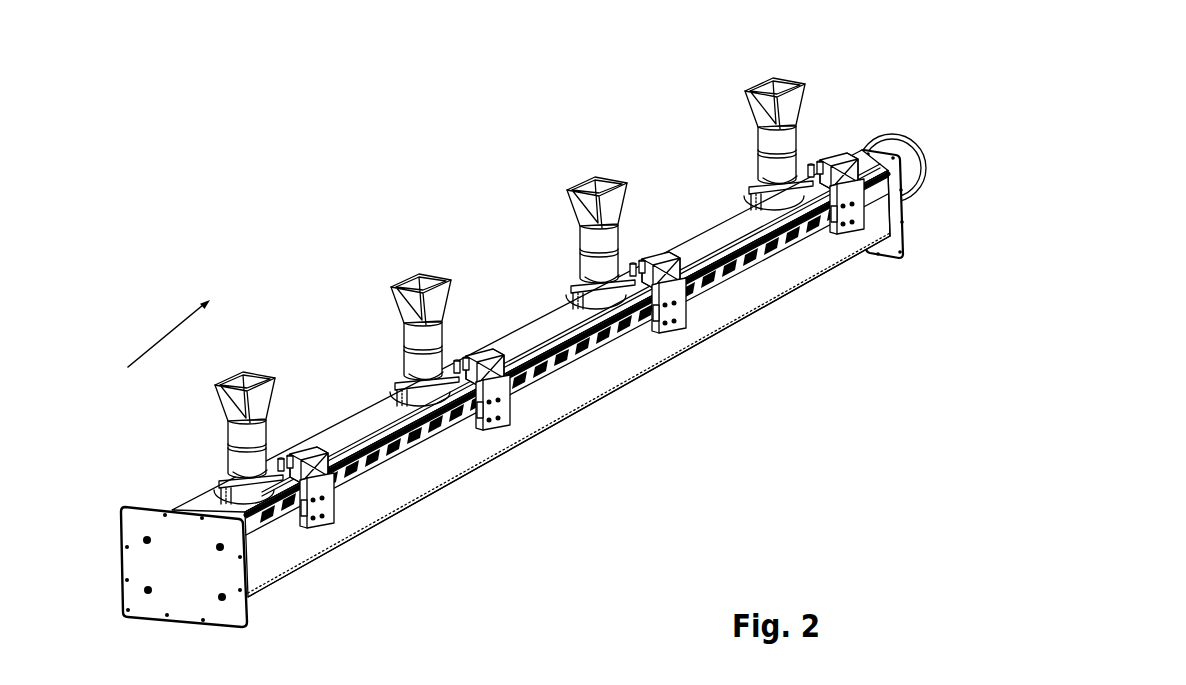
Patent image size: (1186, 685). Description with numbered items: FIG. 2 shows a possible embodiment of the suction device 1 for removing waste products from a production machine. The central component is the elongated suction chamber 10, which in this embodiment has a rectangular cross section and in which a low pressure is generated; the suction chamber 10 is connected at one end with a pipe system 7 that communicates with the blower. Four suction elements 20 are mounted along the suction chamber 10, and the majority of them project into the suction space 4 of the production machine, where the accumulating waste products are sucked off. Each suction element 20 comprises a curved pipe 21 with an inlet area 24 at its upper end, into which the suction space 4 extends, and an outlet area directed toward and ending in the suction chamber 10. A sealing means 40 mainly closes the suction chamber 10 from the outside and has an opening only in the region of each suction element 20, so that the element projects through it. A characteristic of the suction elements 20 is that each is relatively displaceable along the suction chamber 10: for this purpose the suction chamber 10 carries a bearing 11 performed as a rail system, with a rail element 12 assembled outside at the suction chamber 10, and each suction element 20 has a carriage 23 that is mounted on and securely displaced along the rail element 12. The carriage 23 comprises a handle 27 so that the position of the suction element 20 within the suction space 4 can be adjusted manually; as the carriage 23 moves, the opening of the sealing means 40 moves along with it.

The device 1 is at (536, 357).
The suction space 4 is at (157, 351).
The pipe system 7 is at (886, 131).
The suction chamber 10 is at (512, 399).
The bearing 11 is at (568, 385).
The rail element 12 is at (630, 335).
The suction element 20 is at (513, 285).
The curved pipe 21 is at (440, 337).
The carriage 23 is at (743, 268).
The inlet area 24 is at (407, 300).
The handle 27 is at (873, 185).
The sealing means 40 is at (537, 333).